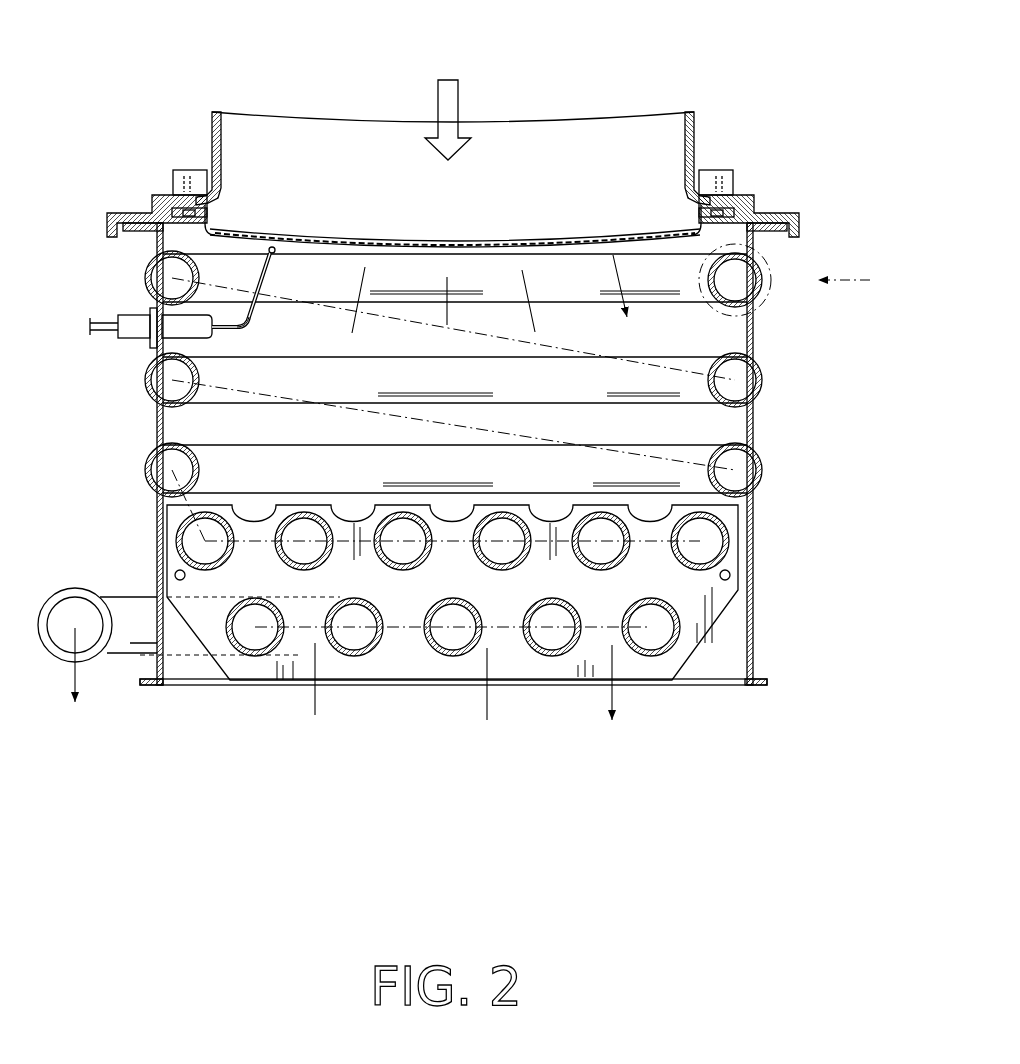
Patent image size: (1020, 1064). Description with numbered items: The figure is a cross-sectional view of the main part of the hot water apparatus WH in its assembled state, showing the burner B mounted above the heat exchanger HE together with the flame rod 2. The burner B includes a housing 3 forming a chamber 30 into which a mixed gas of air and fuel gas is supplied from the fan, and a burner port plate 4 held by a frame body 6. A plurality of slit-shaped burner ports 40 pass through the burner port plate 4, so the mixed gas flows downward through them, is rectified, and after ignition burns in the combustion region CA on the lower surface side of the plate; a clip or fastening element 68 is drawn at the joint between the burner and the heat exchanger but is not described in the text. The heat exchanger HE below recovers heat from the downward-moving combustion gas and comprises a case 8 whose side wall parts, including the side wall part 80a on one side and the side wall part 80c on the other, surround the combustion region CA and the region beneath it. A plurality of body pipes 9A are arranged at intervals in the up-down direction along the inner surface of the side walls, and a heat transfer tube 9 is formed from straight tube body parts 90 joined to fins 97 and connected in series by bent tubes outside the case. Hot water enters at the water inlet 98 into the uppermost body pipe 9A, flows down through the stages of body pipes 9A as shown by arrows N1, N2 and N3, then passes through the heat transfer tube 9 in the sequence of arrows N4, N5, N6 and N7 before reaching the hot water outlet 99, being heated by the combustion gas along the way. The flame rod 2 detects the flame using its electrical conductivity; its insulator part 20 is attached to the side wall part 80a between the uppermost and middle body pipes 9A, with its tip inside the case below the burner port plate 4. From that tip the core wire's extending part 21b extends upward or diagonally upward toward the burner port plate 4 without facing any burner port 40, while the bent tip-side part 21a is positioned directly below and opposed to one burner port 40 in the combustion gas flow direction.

The hot water apparatus WH is at (156, 106).
The housing 3 is at (209, 131).
The burner B is at (148, 183).
The clip bracket 68 is at (183, 225).
The frame body 6 is at (187, 243).
The burner port plate 4 is at (550, 236).
The burner ports 40 is at (273, 240).
The chamber 30 is at (386, 158).
The heat exchanger HE is at (117, 451).
The case 8 is at (153, 421).
The body pipes 9A is at (754, 299).
The water inlet 98 is at (772, 262).
The arrow N1 is at (692, 285).
The arrow N2 is at (633, 392).
The arrow N3 is at (620, 482).
The arrow N4 is at (203, 537).
The arrow N5 is at (500, 542).
The arrow N6 is at (700, 541).
The arrow N7 is at (452, 627).
The combustion region CA is at (462, 262).
The insulator part 20 is at (190, 331).
The flame rod 2 is at (256, 321).
The tip-side part 21a is at (267, 252).
The extending part 21b is at (243, 331).
The side wall part 80a is at (157, 523).
The side wall part 80c is at (750, 516).
The heat transfer tube 9 is at (507, 512).
The straight tube body parts 90 is at (382, 520).
The fins 97 is at (562, 672).
The hot water outlet 99 is at (79, 605).